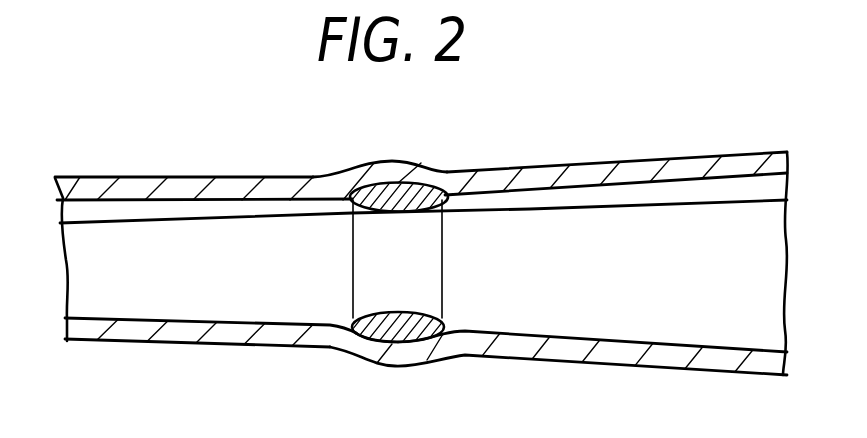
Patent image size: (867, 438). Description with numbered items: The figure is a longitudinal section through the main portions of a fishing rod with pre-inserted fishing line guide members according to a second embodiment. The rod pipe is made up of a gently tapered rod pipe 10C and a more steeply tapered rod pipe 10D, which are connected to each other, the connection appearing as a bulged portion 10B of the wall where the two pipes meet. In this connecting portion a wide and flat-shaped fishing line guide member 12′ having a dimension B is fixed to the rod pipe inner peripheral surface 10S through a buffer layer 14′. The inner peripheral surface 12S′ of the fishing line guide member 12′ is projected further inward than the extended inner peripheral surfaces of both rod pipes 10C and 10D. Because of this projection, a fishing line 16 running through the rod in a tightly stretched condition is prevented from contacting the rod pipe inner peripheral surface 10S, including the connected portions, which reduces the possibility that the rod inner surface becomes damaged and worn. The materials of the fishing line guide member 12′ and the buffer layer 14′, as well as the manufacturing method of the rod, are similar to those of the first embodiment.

The gently tapered rod pipe 10C is at (185, 178).
The bulged portion 10B is at (403, 172).
The more steeply tapered rod pipe 10D is at (600, 170).
The rod pipe inner peripheral surface 10S is at (543, 193).
The fishing line 16 is at (687, 204).
The fishing line guide member 12′ is at (420, 317).
The inner peripheral surface of the fishing line guide member 12S′ is at (373, 311).
The buffer layer 14′ is at (395, 330).
The dimension of the fishing line guide member B is at (442, 250).